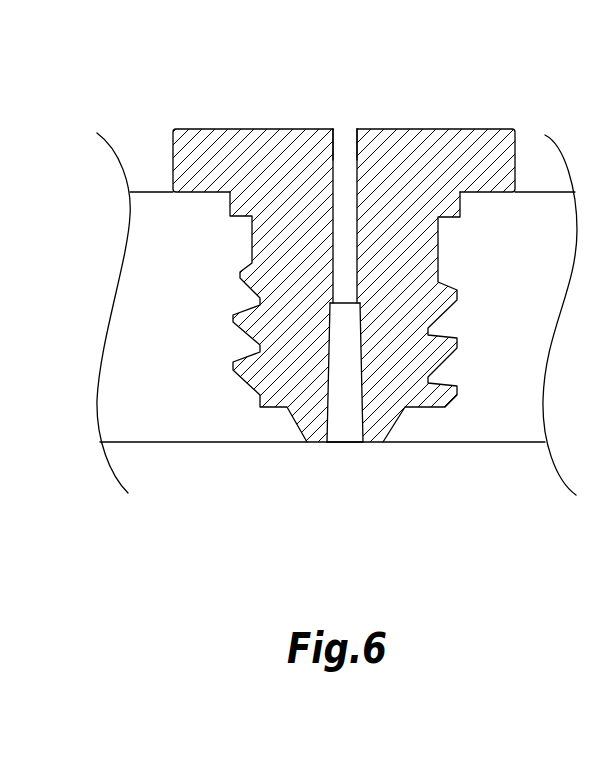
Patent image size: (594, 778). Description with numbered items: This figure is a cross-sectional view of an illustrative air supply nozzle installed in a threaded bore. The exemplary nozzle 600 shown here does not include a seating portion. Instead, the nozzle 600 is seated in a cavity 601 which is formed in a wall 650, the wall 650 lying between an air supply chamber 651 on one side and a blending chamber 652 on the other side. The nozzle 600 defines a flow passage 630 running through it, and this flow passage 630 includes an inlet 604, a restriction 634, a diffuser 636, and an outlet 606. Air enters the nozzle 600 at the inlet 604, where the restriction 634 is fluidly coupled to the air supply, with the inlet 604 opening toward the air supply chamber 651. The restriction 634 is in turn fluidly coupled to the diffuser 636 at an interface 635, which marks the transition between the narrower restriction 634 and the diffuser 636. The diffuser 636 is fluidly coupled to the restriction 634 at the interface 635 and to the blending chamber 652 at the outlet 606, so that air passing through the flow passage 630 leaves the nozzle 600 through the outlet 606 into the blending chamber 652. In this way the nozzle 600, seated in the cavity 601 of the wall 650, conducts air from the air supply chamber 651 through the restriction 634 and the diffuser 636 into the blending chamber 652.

The nozzle 600 is at (114, 69).
The cavity 601 is at (467, 255).
The inlet 604 is at (341, 128).
The outlet 606 is at (349, 445).
The flow passage 630 is at (311, 109).
The restriction 634 is at (334, 203).
The interface 635 is at (347, 297).
The diffuser 636 is at (331, 330).
The wall 650 is at (184, 318).
The air supply chamber 651 is at (345, 45).
The blending chamber 652 is at (296, 515).